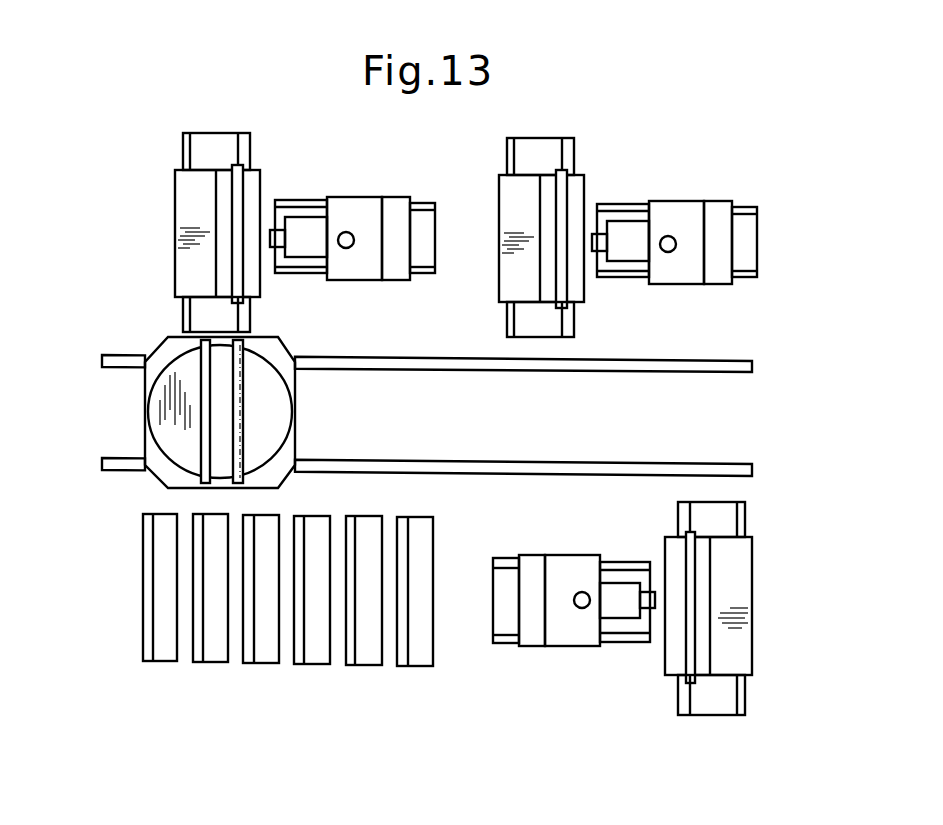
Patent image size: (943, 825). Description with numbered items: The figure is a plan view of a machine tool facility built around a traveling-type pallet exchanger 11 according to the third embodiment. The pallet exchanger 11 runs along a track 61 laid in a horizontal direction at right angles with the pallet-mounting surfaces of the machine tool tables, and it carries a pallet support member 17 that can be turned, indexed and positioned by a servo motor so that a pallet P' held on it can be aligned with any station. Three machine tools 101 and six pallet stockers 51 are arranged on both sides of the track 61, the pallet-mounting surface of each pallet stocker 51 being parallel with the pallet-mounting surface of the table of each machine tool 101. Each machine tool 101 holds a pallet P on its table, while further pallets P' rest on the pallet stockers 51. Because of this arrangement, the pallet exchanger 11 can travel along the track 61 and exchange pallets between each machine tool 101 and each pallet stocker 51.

The machine tool 101 is at (296, 179).
The pallet P is at (466, 424).
The pallet P' is at (147, 520).
The pallet exchanger 11 is at (136, 417).
The pallet support member 17 is at (222, 417).
The track 61 is at (636, 468).
The pallet stocker 51 is at (163, 652).